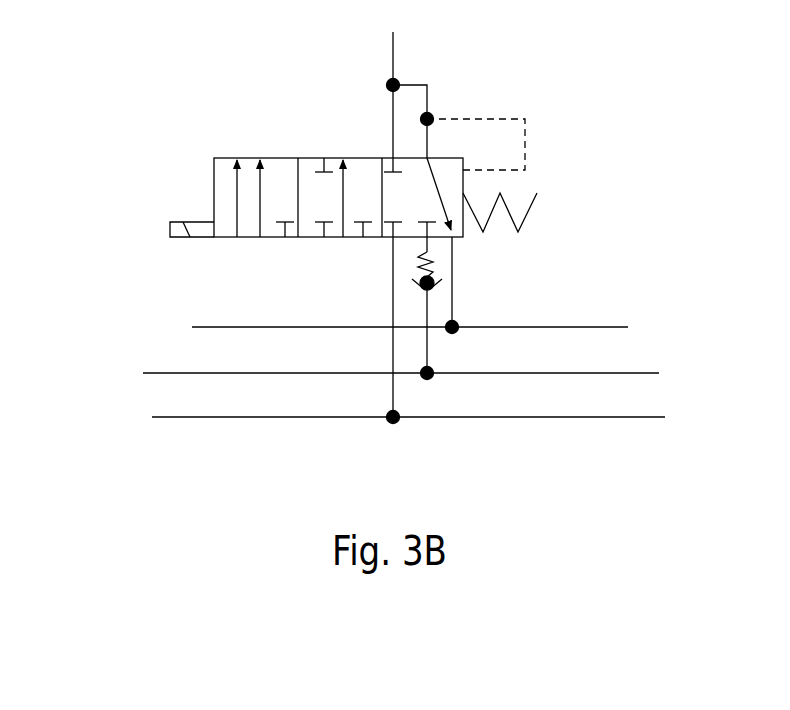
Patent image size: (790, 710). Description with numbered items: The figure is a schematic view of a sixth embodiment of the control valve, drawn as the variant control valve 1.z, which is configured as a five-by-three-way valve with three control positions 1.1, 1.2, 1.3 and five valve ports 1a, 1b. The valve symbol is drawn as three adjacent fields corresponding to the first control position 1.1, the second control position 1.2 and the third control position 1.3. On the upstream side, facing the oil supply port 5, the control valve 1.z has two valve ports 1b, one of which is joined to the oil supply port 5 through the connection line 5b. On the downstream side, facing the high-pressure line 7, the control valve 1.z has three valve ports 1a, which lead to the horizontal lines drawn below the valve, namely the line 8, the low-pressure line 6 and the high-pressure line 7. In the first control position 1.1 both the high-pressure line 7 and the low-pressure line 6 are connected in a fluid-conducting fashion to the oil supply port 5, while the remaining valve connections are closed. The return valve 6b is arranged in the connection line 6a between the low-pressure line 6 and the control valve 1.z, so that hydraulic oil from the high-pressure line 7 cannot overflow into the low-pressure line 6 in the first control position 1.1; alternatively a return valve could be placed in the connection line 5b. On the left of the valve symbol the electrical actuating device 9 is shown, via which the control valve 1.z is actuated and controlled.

The oil supply port 5 is at (395, 53).
The connection line 5b is at (395, 157).
The valve ports 1b is at (428, 157).
The control valve 1.z is at (206, 142).
The first control position 1.1 is at (257, 146).
The second control position 1.2 is at (343, 146).
The third control position 1.3 is at (467, 245).
The valve ports 1a is at (452, 237).
The electrical actuating device 9 is at (193, 221).
The connection line 6a is at (430, 357).
The return valve 6b is at (417, 292).
The line 8 is at (197, 328).
The low-pressure line 6 is at (168, 373).
The high-pressure line 7 is at (158, 417).